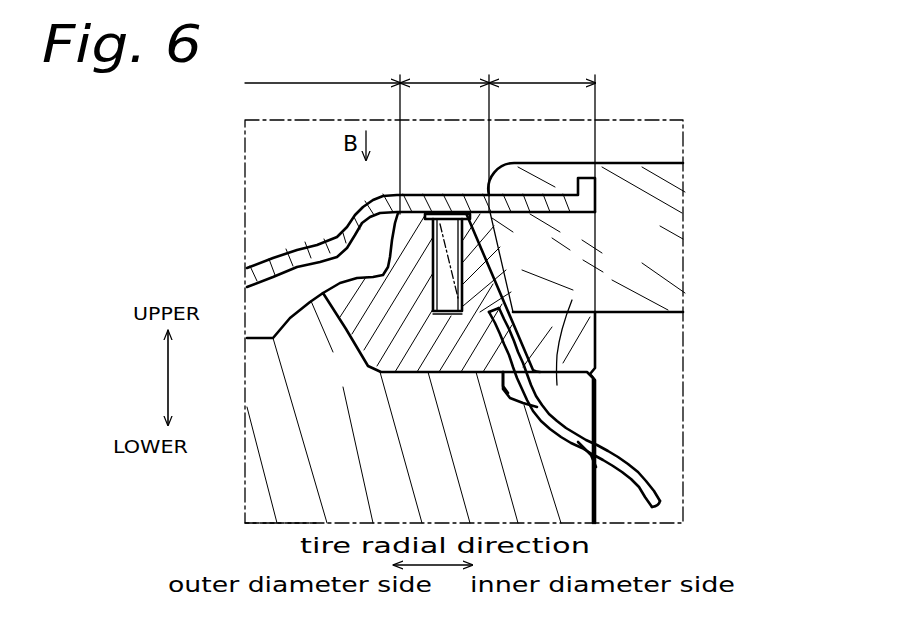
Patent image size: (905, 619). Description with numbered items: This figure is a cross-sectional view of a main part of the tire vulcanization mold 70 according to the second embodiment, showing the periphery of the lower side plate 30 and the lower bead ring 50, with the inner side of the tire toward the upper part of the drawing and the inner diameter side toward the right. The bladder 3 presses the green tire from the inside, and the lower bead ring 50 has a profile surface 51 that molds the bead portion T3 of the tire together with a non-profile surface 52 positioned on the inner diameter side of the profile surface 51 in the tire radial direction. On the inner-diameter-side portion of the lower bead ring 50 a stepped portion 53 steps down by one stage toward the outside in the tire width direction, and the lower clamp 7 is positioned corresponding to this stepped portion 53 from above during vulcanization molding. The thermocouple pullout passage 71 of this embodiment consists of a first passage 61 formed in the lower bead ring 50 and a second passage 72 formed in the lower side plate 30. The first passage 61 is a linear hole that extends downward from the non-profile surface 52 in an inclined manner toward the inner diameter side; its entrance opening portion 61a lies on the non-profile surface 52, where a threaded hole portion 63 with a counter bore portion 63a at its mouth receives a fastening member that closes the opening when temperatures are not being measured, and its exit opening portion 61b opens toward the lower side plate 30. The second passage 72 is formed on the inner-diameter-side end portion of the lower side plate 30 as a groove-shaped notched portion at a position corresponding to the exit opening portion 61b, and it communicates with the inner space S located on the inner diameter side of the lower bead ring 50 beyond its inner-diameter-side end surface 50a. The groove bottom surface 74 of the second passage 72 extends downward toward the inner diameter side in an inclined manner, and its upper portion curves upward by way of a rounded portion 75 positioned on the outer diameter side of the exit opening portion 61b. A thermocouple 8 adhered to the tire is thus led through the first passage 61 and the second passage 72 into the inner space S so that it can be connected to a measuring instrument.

The bladder 3 is at (247, 280).
The lower clamp 7 is at (651, 178).
The thermocouple 8 is at (645, 470).
The lower side plate 30 is at (263, 513).
The lower bead ring 50 is at (344, 355).
The inner-diameter-side end surface 50a is at (600, 357).
The profile surface 51 is at (322, 135).
The non-profile surface 52 is at (444, 134).
The stepped portion 53 is at (542, 184).
The first passage 61 is at (478, 272).
The entrance opening portion 61a is at (461, 222).
The exit opening portion 61b is at (507, 367).
The threaded hole portion 63 is at (421, 295).
The counter bore portion 63a is at (401, 274).
The tire vulcanization mold 70 is at (227, 448).
The thermocouple pullout passage 71 is at (670, 272).
The second passage 72 is at (557, 380).
The groove bottom surface 74 is at (533, 407).
The rounded portion 75 is at (503, 387).
The bead portion T3 is at (352, 273).
The inner space S is at (660, 400).